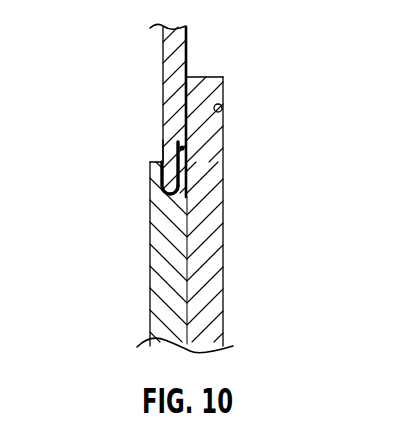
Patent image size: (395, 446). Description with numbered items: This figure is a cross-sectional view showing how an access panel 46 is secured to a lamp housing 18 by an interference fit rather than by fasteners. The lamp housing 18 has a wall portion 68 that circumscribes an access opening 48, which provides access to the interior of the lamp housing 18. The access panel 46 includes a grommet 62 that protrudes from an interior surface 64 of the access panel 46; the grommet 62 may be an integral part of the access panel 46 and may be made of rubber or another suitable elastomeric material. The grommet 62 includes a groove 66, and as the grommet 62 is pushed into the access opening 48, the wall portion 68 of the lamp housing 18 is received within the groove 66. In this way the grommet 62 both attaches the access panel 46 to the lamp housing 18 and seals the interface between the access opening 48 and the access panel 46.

The lamp housing 18 is at (142, 60).
The access panel 46 is at (222, 107).
The access opening 48 is at (94, 268).
The grommet 62 is at (167, 268).
The interior surface 64 is at (184, 149).
The groove 66 is at (168, 196).
The wall portion 68 is at (168, 152).